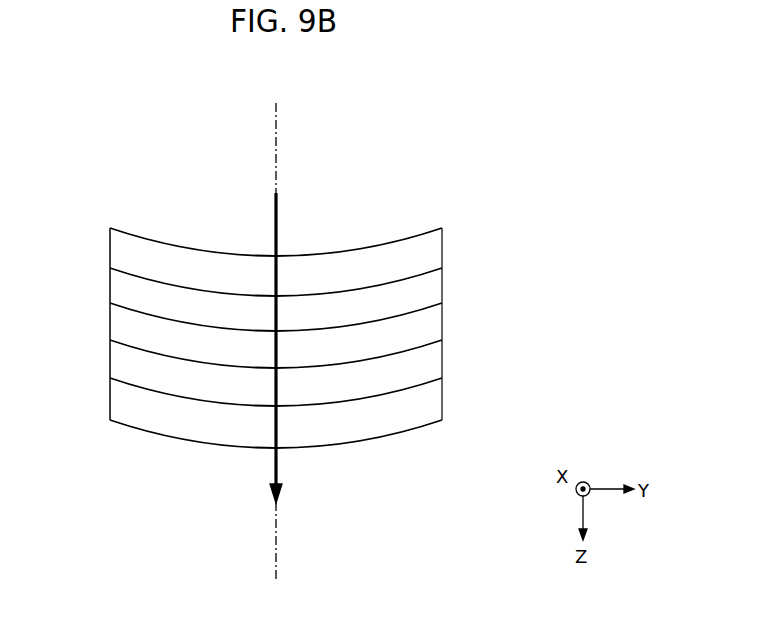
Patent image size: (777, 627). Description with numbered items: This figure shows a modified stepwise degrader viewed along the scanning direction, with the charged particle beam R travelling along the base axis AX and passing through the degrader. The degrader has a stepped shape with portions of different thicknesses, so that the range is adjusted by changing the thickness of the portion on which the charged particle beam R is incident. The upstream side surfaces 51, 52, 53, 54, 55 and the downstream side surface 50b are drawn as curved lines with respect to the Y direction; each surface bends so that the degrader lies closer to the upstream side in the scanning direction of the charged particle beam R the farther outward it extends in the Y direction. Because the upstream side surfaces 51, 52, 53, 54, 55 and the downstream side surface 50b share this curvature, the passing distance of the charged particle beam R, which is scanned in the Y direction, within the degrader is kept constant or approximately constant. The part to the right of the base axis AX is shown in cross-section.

The downstream side surface 50b is at (375, 442).
The upstream side surface 51 is at (123, 385).
The upstream side surface 52 is at (123, 346).
The upstream side surface 53 is at (123, 308).
The upstream side surface 54 is at (123, 271).
The upstream side surface 55 is at (141, 236).
The base axis AX is at (277, 150).
The charged particle beam R is at (278, 222).